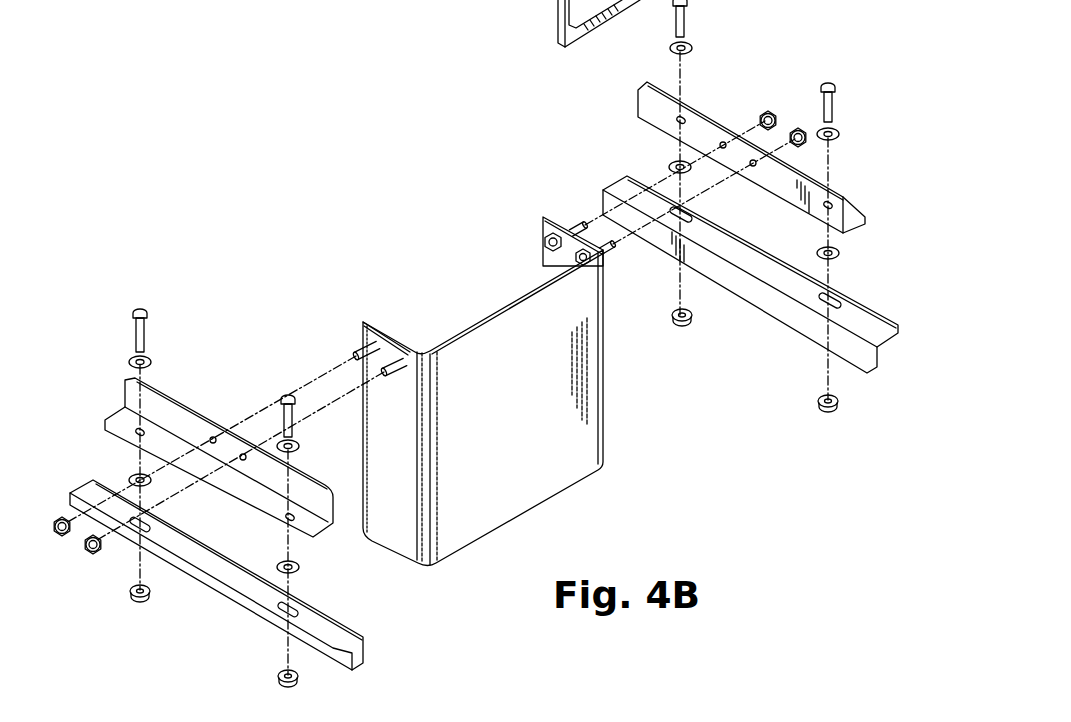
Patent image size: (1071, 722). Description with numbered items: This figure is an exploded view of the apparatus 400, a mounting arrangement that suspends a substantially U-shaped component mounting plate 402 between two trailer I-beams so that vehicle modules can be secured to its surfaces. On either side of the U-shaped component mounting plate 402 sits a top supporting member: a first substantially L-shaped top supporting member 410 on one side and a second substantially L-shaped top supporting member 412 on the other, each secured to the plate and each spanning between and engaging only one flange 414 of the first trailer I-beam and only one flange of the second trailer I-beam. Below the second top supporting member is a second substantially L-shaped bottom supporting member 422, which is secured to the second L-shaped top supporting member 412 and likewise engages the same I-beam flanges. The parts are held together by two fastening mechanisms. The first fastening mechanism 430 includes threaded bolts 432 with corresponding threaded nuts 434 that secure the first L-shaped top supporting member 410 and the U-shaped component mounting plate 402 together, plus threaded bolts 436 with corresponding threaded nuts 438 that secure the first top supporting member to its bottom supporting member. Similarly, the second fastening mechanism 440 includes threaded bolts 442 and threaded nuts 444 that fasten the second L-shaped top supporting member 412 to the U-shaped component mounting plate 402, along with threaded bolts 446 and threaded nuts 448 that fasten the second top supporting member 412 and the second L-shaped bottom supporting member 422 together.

The apparatus 400 is at (437, 190).
The U-shaped component mounting plate 402 is at (494, 535).
The first L-shaped top supporting member 410 is at (312, 497).
The second L-shaped top supporting member 412 is at (860, 205).
The flange of the first trailer I-beam 414 is at (553, 23).
The second L-shaped bottom supporting member 422 is at (873, 330).
The first fastening mechanism 430 is at (319, 360).
The threaded bolts 432 is at (368, 347).
The threaded nuts 434 is at (86, 549).
The threaded bolts 436 is at (283, 398).
The threaded nuts 438 is at (278, 677).
The second fastening mechanism 440 is at (572, 188).
The threaded bolts 442 is at (581, 259).
The threaded nuts 444 is at (798, 129).
The threaded bolts 446 is at (826, 85).
The threaded nuts 448 is at (692, 320).